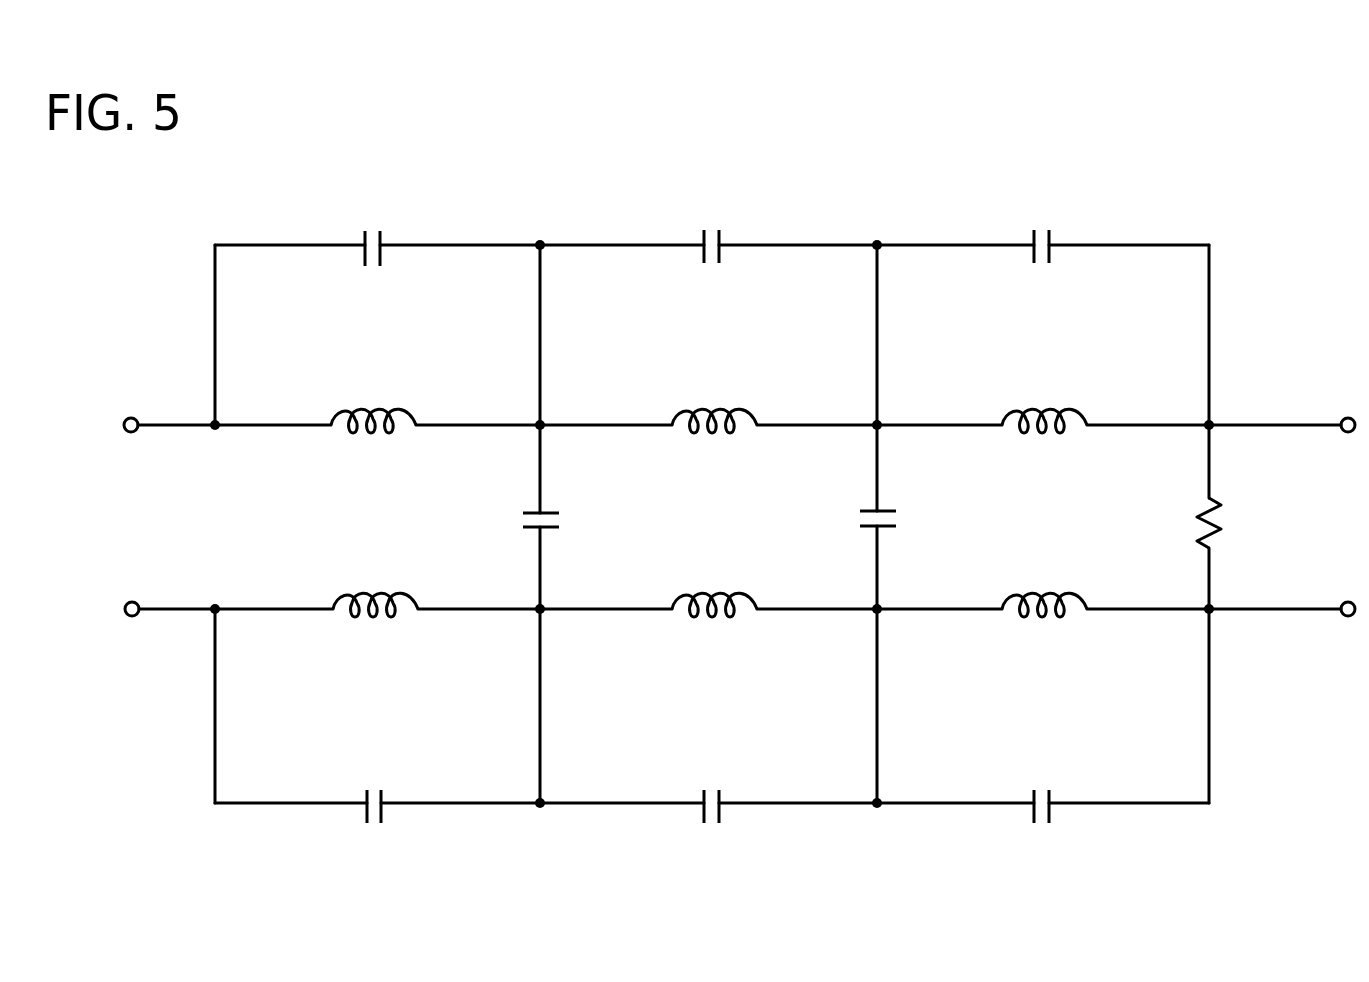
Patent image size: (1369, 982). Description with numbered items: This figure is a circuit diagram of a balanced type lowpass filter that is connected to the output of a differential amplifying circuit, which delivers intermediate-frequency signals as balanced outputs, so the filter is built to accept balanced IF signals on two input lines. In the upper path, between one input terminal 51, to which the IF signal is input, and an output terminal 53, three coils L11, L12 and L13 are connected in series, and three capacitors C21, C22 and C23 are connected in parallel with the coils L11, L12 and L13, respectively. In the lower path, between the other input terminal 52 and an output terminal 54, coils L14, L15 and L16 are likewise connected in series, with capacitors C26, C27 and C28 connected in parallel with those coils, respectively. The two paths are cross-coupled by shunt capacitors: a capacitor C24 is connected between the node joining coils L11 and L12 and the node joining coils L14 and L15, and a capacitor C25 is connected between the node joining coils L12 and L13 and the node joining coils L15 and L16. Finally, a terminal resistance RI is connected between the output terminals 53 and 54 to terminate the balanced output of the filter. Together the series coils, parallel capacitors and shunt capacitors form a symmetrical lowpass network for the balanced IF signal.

The capacitor C21 is at (370, 226).
The capacitor C22 is at (712, 224).
The capacitor C23 is at (1042, 224).
The capacitor C24 is at (576, 526).
The capacitor C25 is at (915, 522).
The capacitor C26 is at (374, 828).
The capacitor C27 is at (714, 828).
The capacitor C28 is at (1042, 828).
The coil L11 is at (373, 445).
The coil L12 is at (714, 444).
The coil L13 is at (1044, 444).
The coil L14 is at (375, 586).
The coil L15 is at (714, 583).
The coil L16 is at (1044, 583).
The terminal resistance RI is at (1235, 523).
The input terminal 51 is at (133, 417).
The input terminal 52 is at (133, 601).
The output terminal 53 is at (1348, 417).
The output terminal 54 is at (1349, 601).